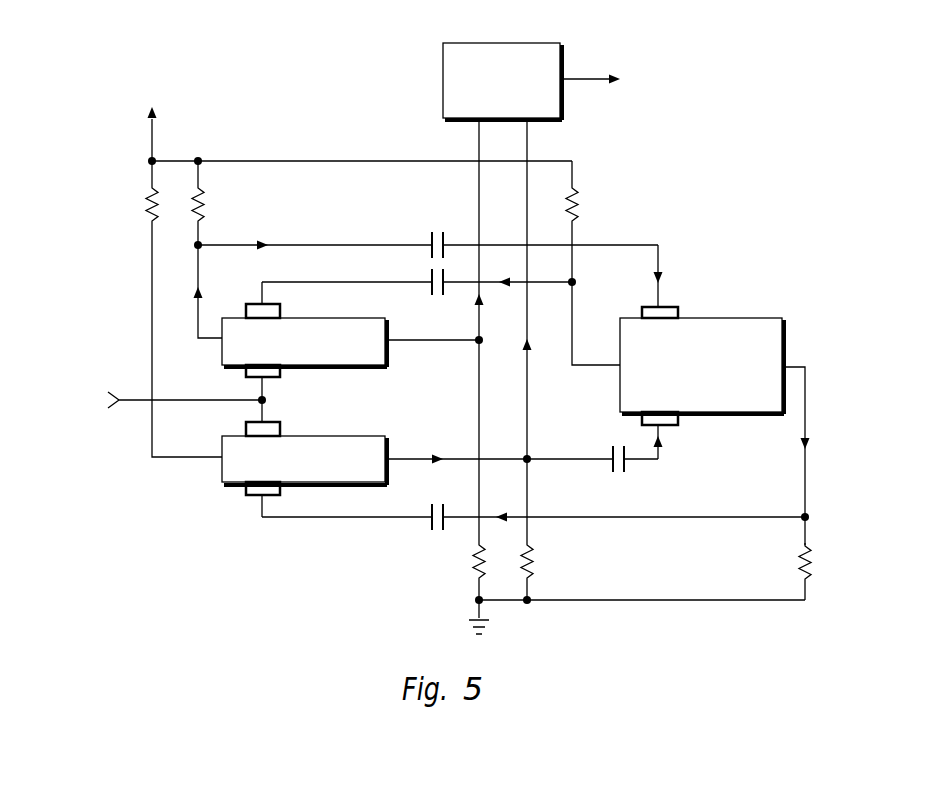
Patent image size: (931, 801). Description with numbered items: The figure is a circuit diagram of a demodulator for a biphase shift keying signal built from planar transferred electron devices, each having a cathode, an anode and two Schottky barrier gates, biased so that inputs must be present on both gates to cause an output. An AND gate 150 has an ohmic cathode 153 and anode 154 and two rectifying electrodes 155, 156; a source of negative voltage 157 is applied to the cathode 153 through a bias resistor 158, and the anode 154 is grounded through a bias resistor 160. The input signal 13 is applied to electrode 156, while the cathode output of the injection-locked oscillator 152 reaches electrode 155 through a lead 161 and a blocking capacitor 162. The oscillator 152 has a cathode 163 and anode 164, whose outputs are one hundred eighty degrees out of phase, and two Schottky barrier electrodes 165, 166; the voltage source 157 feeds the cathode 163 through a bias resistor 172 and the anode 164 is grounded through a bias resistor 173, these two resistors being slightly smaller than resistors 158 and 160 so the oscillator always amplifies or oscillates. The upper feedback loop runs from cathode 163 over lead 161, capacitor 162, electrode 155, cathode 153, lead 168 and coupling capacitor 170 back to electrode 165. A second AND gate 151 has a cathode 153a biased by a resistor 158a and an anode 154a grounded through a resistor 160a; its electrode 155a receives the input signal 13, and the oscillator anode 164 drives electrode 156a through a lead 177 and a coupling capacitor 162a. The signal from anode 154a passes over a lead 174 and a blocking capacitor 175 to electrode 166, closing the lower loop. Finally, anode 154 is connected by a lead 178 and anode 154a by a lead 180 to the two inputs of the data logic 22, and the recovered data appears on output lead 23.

The input signal 13 is at (128, 400).
The data logic 22 is at (500, 43).
The output lead 23 is at (587, 79).
The AND gate 150 is at (212, 353).
The second AND gate 151 is at (210, 471).
The injection-locked oscillator 152 is at (760, 303).
The cathode 153 is at (222, 338).
The cathode 153a is at (222, 456).
The anode 154 is at (390, 346).
The anode 154a is at (390, 459).
The Schottky barrier electrode 155 is at (280, 305).
The Schottky barrier electrode 155a is at (278, 428).
The Schottky barrier electrode 156 is at (276, 374).
The Schottky barrier electrode 156a is at (272, 496).
The source of negative voltage 157 is at (152, 139).
The bias resistor 158 is at (204, 200).
The bias resistor 158a is at (146, 196).
The bias resistor 160 is at (472, 561).
The bias resistor 160a is at (535, 561).
The lead 161 is at (548, 282).
The blocking capacitor 162 is at (430, 290).
The coupling capacitor 162a is at (430, 524).
The cathode 163 is at (618, 366).
The anode 164 is at (784, 365).
The Schottky barrier electrode 165 is at (678, 307).
The Schottky barrier electrode 166 is at (672, 426).
The lead 168 is at (219, 246).
The coupling capacitor 170 is at (442, 234).
The bias resistor 172 is at (580, 200).
The bias resistor 173 is at (812, 566).
The lead 174 is at (565, 459).
The blocking capacitor 175 is at (627, 469).
The lead 177 is at (714, 516).
The lead 178 is at (478, 310).
The lead 180 is at (527, 406).